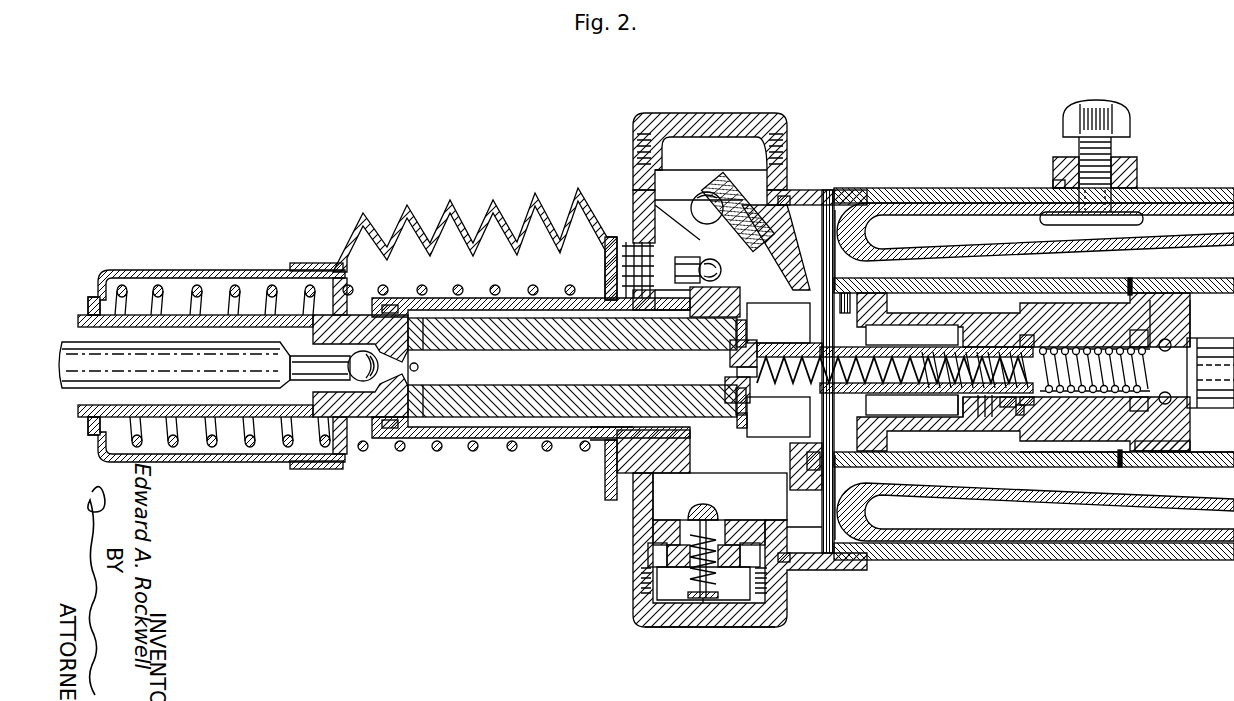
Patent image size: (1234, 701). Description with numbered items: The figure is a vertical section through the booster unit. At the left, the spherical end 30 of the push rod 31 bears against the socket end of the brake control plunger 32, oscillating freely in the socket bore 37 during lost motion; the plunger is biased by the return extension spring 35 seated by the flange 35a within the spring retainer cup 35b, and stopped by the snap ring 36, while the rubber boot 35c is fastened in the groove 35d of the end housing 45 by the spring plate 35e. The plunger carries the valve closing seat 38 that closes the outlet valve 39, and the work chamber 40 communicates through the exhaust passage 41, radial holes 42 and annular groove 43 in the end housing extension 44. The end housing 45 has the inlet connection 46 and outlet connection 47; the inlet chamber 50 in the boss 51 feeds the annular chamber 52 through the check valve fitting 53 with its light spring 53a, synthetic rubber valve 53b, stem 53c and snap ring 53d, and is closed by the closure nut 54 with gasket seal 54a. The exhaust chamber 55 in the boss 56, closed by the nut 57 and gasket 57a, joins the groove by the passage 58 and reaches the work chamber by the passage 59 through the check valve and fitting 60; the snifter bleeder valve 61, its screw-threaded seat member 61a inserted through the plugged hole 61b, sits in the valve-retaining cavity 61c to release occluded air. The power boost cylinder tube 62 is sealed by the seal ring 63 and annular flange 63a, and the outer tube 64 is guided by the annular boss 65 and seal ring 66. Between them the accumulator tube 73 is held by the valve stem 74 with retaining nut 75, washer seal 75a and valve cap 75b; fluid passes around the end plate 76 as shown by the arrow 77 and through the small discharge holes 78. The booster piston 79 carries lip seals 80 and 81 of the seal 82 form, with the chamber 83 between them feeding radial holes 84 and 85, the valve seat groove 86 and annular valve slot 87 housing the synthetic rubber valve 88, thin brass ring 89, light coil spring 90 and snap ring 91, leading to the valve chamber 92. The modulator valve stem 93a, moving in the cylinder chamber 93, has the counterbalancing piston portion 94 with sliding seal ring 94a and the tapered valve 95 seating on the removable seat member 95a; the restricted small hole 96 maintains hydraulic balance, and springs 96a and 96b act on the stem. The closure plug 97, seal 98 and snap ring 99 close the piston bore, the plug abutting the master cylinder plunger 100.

The spherical end 30 is at (243, 366).
The push rod 31 is at (84, 364).
The brake control plunger 32 is at (360, 413).
The return extension spring 35 is at (225, 432).
The flange 35a is at (95, 300).
The spring retainer cup 35b is at (178, 272).
The rubber boot 35c is at (432, 210).
The groove 35d is at (632, 440).
The spring plate 35e is at (605, 473).
The snap ring 36 is at (735, 328).
The socket bore 37 is at (330, 382).
The valve closing seat 38 is at (726, 400).
The outlet valve 39 is at (736, 372).
The work chamber 40 is at (778, 416).
The exhaust passage 41 is at (519, 381).
The radial holes 42 is at (419, 368).
The annular groove 43 is at (446, 438).
The end housing extension 44 is at (470, 298).
The end housing 45 is at (618, 150).
The inlet connection 46 is at (672, 526).
The outlet connection 47 is at (696, 194).
The inlet chamber 50 is at (641, 570).
The boss 51 is at (648, 554).
The annular chamber 52 is at (680, 480).
The check valve fitting 53 is at (725, 515).
The light spring 53a is at (728, 582).
The synthetic rubber valve 53b is at (716, 502).
The stem 53c is at (695, 585).
The snap ring 53d is at (702, 603).
The closure nut 54 is at (742, 618).
The gasket seal 54a is at (775, 600).
The exhaust chamber 55 is at (668, 188).
The boss 56 is at (648, 215).
The nut 57 is at (703, 113).
The gasket 57a is at (790, 136).
The passage 58 is at (670, 300).
The passage 59 is at (776, 254).
The check valve and fitting 60 is at (737, 186).
The snifter bleeder valve 61 is at (715, 299).
The screw-threaded seat member 61a is at (678, 265).
The plugged hole 61b is at (637, 309).
The valve-retaining cavity 61c is at (722, 268).
The power boost cylinder tube 62 is at (1195, 294).
The seal ring 63 is at (800, 485).
The annular flange 63a is at (806, 465).
The tube 64 is at (1190, 189).
The annular boss 65 is at (823, 190).
The seal ring 66 is at (800, 200).
The accumulator tube 73 is at (950, 240).
The valve stem 74 is at (1097, 226).
The retaining nut 75 is at (1058, 164).
The washer seal 75a is at (1053, 183).
The valve cap 75b is at (1085, 102).
The end plate 76 is at (830, 192).
The arrow 77 is at (850, 490).
The discharge holes 78 is at (1130, 286).
The booster piston 79 is at (945, 312).
The lip seal 80 is at (880, 296).
The lip seal 81 is at (1160, 467).
The seal 82 is at (1170, 440).
The chamber 83 is at (1062, 467).
The radial hole 84 is at (1028, 340).
The radial hole 85 is at (1008, 410).
The valve seat groove 86 is at (1022, 412).
The annular valve slot 87 is at (988, 420).
The synthetic rubber valve 88 is at (996, 420).
The thin brass ring 89 is at (980, 420).
The light coil spring 90 is at (966, 420).
The snap ring 91 is at (958, 405).
The valve chamber 92 is at (946, 335).
The cylinder chamber 93 is at (1080, 348).
The modulator valve stem 93a is at (880, 398).
The counterbalancing piston portion 94 is at (1034, 342).
The sliding seal ring 94a is at (1028, 334).
The tapered valve 95 is at (872, 345).
The removable seat member 95a is at (830, 333).
The restricted small hole 96 is at (730, 352).
The spring 96a is at (1138, 332).
The spring 96b is at (1140, 411).
The closure plug 97 is at (1165, 340).
The seal 98 is at (1162, 391).
The snap ring 99 is at (1164, 355).
The master cylinder plunger 100 is at (1208, 350).